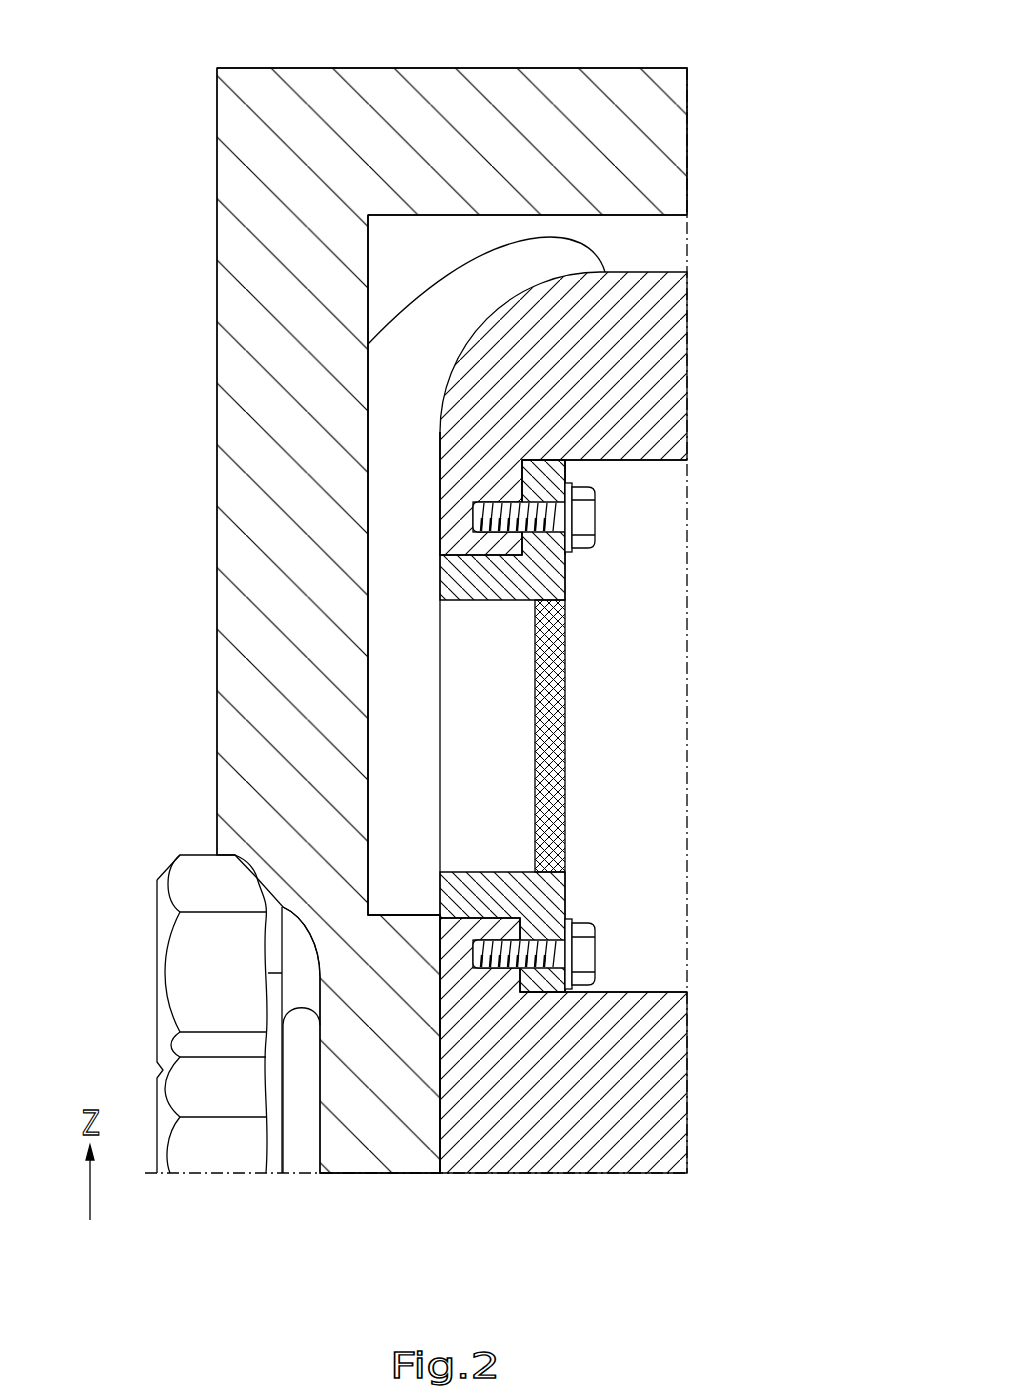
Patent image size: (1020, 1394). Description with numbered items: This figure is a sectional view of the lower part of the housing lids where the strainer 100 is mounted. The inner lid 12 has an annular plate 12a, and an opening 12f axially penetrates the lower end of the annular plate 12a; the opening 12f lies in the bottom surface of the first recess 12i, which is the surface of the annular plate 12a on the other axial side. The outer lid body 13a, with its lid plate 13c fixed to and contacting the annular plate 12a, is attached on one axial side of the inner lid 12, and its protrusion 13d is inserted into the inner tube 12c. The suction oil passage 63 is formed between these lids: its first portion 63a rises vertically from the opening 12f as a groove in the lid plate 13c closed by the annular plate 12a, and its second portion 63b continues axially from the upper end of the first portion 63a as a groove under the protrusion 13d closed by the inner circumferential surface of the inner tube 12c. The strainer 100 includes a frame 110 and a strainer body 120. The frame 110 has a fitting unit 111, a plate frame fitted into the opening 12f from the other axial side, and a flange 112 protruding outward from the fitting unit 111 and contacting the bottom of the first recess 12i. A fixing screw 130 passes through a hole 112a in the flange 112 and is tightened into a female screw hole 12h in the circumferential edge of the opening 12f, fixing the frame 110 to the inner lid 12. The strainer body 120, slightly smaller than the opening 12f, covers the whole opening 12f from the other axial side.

The inner lid 12 is at (700, 283).
The annular plate 12a is at (452, 515).
The inner tube 12c is at (660, 430).
The opening 12f is at (440, 902).
The female screw hole 12h is at (522, 527).
The first recess 12i is at (655, 992).
The outer lid body 13a is at (208, 92).
The lid plate 13c is at (245, 346).
The protrusion 13d is at (597, 122).
The suction oil passage 63 is at (370, 771).
The first portion 63a is at (368, 612).
The second portion 63b is at (368, 344).
The strainer 100 is at (602, 874).
The frame 110 is at (600, 874).
The fitting unit 111 is at (452, 905).
The flange 112 is at (545, 987).
The hole 112a is at (550, 513).
The strainer body 120 is at (567, 678).
The fixing screw 130 is at (585, 540).